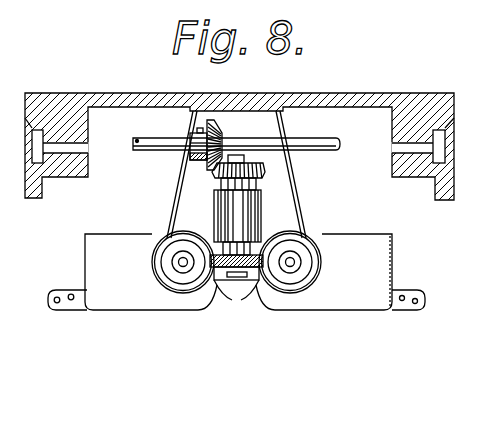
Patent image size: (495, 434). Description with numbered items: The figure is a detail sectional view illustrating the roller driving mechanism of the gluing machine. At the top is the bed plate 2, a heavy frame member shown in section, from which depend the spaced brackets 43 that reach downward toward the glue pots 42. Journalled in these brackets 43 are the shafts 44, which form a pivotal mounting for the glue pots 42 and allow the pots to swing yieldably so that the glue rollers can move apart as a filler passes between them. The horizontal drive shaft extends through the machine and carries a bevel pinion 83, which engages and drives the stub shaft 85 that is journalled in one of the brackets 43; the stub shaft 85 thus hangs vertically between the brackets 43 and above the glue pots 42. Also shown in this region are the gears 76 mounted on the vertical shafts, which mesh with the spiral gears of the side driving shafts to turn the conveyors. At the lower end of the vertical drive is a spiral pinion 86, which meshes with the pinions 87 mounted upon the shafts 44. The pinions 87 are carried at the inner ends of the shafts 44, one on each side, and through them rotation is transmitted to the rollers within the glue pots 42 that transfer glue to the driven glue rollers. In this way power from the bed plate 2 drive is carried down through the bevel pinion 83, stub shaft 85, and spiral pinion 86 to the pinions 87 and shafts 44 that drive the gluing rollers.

The bed plate 2 is at (404, 93).
The gears 76 is at (320, 136).
The brackets 43 is at (298, 192).
The bevel pinion 83 is at (203, 170).
The stub shaft 85 is at (240, 157).
The spiral pinion 86 is at (252, 280).
The glue pots 42 is at (84, 258).
The pinions 87 is at (153, 272).
The shafts 44 is at (183, 261).